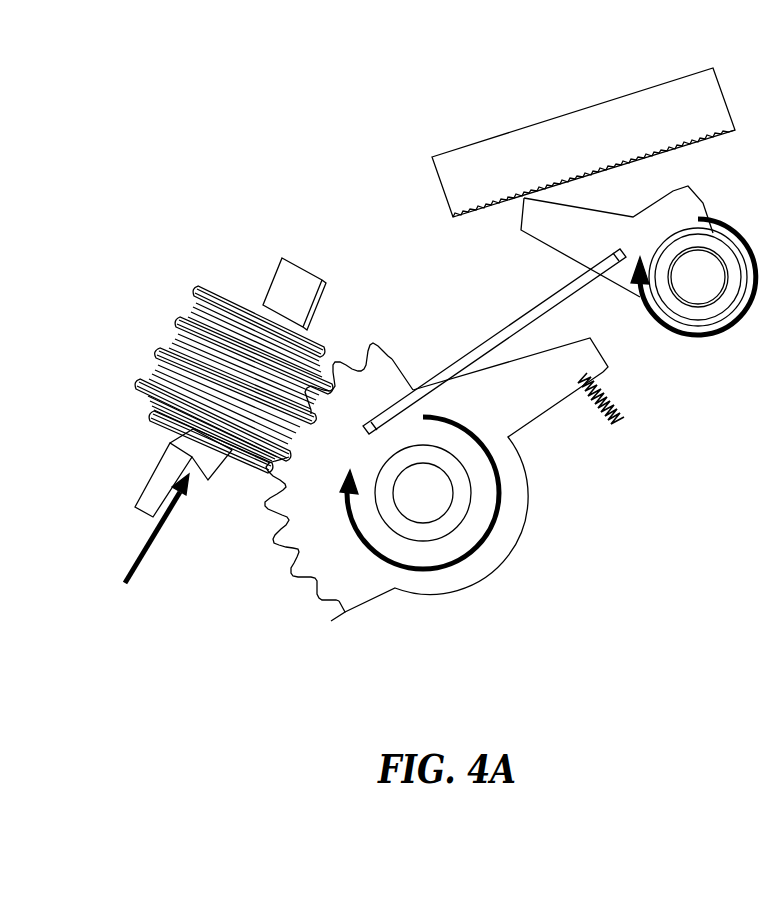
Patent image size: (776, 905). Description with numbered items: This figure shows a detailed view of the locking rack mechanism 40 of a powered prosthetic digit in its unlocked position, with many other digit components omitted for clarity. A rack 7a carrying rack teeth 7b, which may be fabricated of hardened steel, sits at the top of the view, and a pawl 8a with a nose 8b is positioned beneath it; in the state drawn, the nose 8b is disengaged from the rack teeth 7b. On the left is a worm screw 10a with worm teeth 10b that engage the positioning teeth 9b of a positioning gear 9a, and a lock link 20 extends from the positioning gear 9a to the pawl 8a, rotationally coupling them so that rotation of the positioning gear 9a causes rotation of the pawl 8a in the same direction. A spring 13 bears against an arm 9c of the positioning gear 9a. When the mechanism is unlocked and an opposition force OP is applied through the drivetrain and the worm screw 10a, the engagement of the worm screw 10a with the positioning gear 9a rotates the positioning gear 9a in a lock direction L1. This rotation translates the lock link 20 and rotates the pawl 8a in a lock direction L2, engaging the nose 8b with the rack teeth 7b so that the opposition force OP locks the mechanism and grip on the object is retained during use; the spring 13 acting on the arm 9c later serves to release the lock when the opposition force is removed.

The locking rack mechanism 40 is at (341, 135).
The rack 7a is at (527, 138).
The rack teeth 7b is at (508, 193).
The pawl 8a is at (697, 213).
The nose 8b is at (530, 202).
The lock link 20 is at (502, 347).
The worm screw 10a is at (170, 380).
The worm teeth 10b is at (182, 320).
The positioning gear 9a is at (408, 578).
The positioning teeth 9b is at (325, 623).
The arm 9c is at (560, 387).
The spring 13 is at (612, 422).
The lock direction L1 is at (475, 565).
The lock direction L2 is at (715, 340).
The opposition force OP is at (150, 543).